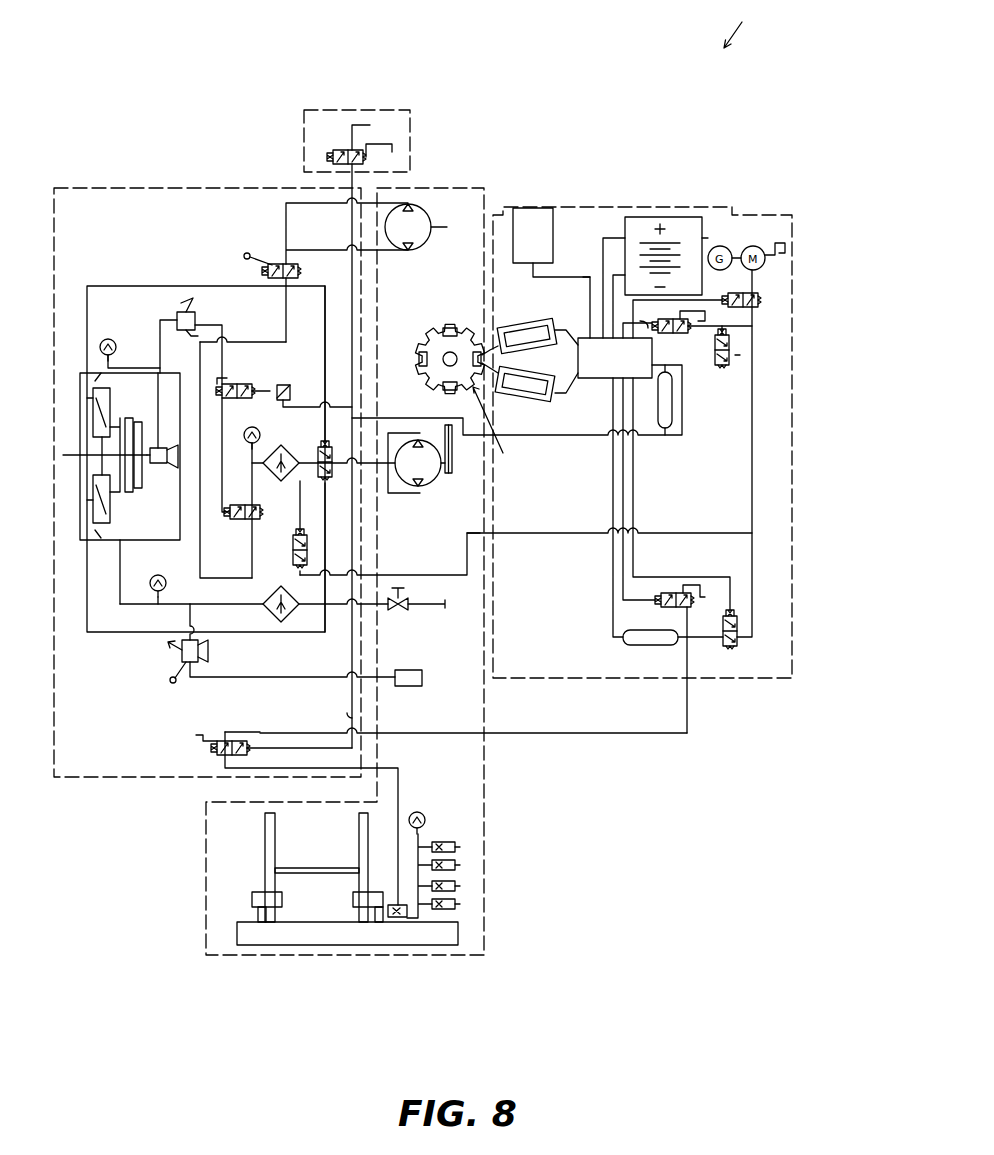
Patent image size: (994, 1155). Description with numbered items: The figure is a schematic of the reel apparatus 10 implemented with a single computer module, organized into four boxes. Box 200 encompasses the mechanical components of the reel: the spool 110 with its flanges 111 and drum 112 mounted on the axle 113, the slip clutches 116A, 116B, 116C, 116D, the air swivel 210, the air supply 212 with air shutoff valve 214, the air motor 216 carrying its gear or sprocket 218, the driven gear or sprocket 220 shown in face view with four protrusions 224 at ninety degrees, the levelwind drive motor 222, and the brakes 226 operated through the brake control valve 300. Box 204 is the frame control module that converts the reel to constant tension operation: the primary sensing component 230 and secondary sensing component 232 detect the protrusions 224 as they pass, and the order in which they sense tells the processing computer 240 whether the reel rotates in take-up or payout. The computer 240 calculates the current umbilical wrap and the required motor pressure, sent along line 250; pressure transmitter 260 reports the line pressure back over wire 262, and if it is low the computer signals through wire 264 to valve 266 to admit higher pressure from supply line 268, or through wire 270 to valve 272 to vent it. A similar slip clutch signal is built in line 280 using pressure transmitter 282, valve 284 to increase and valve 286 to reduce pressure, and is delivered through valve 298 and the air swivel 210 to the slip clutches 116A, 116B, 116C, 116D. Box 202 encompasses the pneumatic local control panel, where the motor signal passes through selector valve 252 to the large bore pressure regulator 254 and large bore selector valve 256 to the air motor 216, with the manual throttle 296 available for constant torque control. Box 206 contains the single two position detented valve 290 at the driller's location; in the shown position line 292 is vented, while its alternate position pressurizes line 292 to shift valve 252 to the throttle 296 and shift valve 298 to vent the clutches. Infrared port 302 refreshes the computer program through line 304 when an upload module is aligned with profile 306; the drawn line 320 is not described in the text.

The reel apparatus 10 is at (744, 24).
The box encompassing local control panel components 202 is at (89, 187).
The box encompassing mechanical components of reel 200 is at (458, 186).
The box encompassing driller's control panel components 206 is at (404, 110).
The valve 290 is at (340, 150).
The infrared port 302 is at (538, 207).
The line 304 is at (584, 276).
The box encompassing frame control module components 204 is at (666, 207).
The profile 306 is at (745, 213).
The levelwind drive motor 222 is at (462, 266).
The manual throttle 296 is at (130, 368).
The selector valve 252 is at (232, 380).
The indicator pads or protrusions 224 is at (440, 333).
The primary sensing component 230 is at (516, 330).
The wire 270 is at (640, 321).
The valve 272 is at (760, 298).
The wire 264 is at (700, 326).
The valve 266 is at (735, 354).
The secondary sensing component 232 is at (527, 399).
The processing computer 240 is at (602, 373).
The wire 262 is at (672, 372).
The pressure transmitter 260 is at (672, 420).
The line 250 is at (667, 438).
The driven gear or sprocket 220 is at (497, 452).
The gear or sprocket 218 is at (453, 463).
The air motor 216 is at (436, 479).
The large bore selector valve 256 is at (334, 482).
The large bore pressure regulator 254 is at (240, 522).
The supply line 268 is at (672, 533).
The valve 286 is at (700, 588).
The brake control valve 300 is at (160, 660).
The air shutoff valve 214 is at (397, 611).
The air supply 212 is at (436, 612).
The pressure transmitter 282 is at (648, 645).
The valve 284 is at (752, 637).
The brakes 226 is at (415, 687).
The line 292 is at (350, 713).
The line 320 is at (260, 732).
The line 280 is at (687, 718).
The valve 298 is at (205, 746).
The flanges 111 is at (268, 830).
The spool 110 is at (268, 876).
The drum 112 is at (340, 868).
The slip clutch 116A is at (458, 845).
The slip clutch 116B is at (458, 863).
The slip clutch 116C is at (458, 882).
The slip clutch 116D is at (458, 899).
The axle 113 is at (257, 935).
The air swivel 210 is at (398, 920).